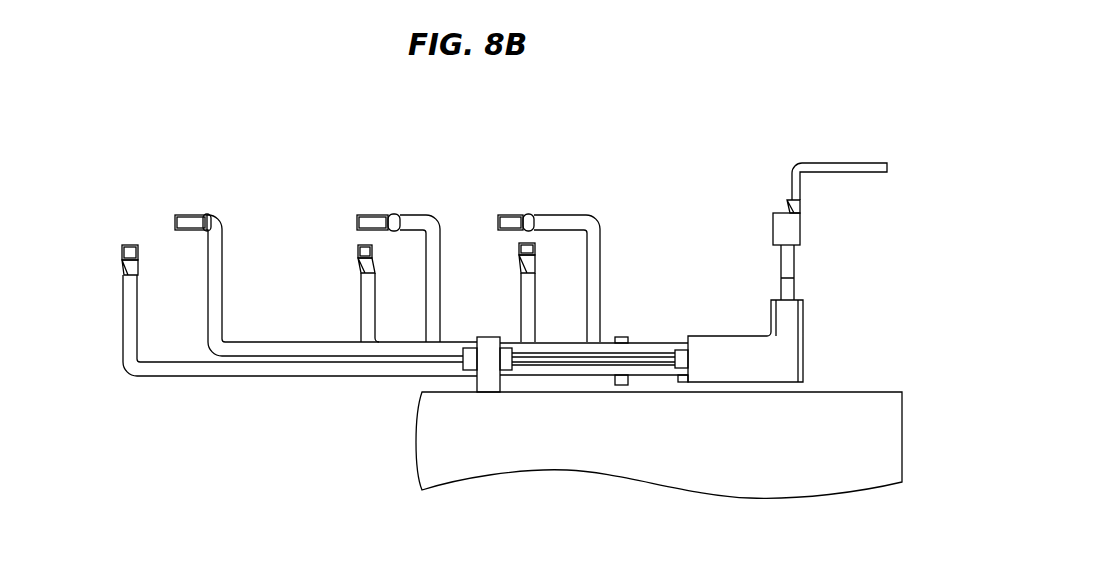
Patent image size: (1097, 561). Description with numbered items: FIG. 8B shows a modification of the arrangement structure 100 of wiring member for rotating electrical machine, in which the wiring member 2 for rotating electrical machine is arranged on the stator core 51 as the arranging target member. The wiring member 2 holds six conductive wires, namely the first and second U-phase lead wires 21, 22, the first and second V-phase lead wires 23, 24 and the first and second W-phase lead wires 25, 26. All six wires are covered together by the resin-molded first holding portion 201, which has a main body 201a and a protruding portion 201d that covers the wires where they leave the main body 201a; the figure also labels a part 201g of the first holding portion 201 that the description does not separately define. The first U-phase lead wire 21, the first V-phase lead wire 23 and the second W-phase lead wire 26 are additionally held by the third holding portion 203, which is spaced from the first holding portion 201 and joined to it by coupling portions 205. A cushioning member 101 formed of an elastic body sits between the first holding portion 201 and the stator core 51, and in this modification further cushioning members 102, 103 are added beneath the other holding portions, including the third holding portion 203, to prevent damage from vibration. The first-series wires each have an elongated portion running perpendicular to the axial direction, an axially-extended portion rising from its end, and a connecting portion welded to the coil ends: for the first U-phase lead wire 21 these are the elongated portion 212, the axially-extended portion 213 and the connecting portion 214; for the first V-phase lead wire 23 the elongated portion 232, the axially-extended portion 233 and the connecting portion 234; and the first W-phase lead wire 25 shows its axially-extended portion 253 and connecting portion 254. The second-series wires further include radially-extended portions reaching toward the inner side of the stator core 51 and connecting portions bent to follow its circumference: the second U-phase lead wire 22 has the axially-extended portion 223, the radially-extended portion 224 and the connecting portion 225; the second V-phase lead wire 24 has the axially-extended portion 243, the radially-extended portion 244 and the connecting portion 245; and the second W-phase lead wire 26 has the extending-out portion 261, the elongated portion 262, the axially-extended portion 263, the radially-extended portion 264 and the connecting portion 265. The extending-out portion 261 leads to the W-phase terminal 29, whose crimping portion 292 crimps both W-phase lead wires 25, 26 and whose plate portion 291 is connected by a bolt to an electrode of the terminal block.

The wiring member for rotating electrical machine 2 is at (681, 337).
The first U-phase lead wire 21 is at (338, 267).
The second U-phase lead wire 22 is at (573, 248).
The first V-phase lead wire 23 is at (272, 312).
The second V-phase lead wire 24 is at (379, 249).
The first W-phase lead wire 25 is at (512, 269).
The second W-phase lead wire 26 is at (299, 296).
The W-phase terminal 29 is at (848, 176).
The stator core 51 is at (898, 390).
The arrangement structure of wiring member for rotating electrical machine 100 is at (664, 386).
The cushioning member 101 is at (777, 387).
The cushioning member 102 is at (622, 385).
The cushioning member 103 is at (490, 373).
The first holding portion 201 is at (713, 377).
The main body 201a is at (792, 372).
The protruding portion 201d is at (712, 343).
The upper projecting portion 201g is at (790, 313).
The third holding portion 203 is at (487, 378).
The coupling portions 205 is at (550, 362).
The elongated portion 212 is at (637, 350).
The axially-extended portion 213 is at (370, 307).
The connecting portion 214 is at (358, 250).
The axially-extended portion 223 is at (590, 295).
The radially-extended portion 224 is at (552, 222).
The connecting portion 225 is at (512, 220).
The elongated portion 232 is at (323, 372).
The axially-extended portion 233 is at (130, 308).
The connecting portion 234 is at (122, 250).
The axially-extended portion 243 is at (432, 292).
The radially-extended portion 244 is at (397, 222).
The connecting portion 245 is at (368, 217).
The axially-extended portion 253 is at (530, 297).
The connecting portion 254 is at (532, 253).
The extending-out portion 261 is at (788, 267).
The elongated portion 262 is at (400, 347).
The axially-extended portion 263 is at (217, 297).
The radially-extended portion 264 is at (209, 217).
The connecting portion 265 is at (183, 222).
The plate portion 291 is at (870, 173).
The crimping portion 292 is at (788, 232).